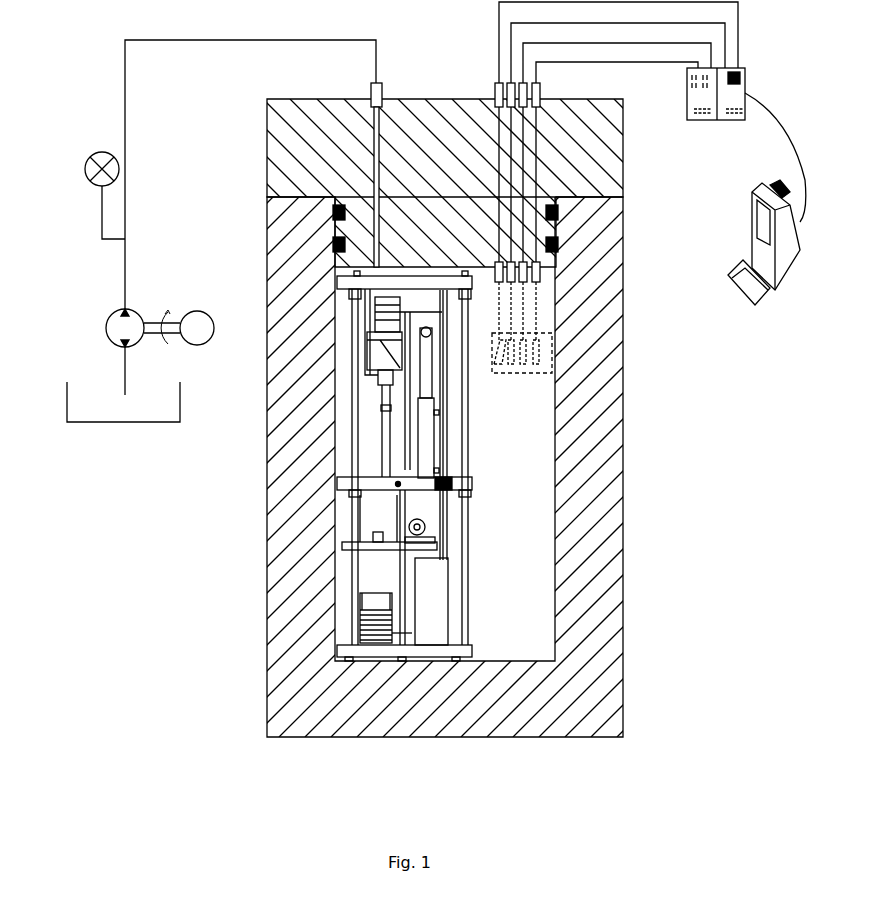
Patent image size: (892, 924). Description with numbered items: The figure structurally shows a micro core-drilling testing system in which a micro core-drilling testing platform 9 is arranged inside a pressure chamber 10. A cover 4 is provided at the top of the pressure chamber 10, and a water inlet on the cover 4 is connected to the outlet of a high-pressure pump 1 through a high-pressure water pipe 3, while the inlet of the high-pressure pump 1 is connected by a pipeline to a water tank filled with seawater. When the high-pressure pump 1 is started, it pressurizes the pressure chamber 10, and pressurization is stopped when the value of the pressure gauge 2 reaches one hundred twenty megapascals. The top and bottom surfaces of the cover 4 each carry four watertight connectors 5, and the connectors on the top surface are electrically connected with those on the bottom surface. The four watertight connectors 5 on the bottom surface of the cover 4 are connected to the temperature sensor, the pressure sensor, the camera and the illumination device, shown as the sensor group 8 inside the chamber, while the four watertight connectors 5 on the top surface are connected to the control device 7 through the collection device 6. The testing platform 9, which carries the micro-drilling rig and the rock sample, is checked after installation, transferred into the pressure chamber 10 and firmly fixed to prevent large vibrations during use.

The high-pressure pump 1 is at (140, 365).
The pressure gauge 2 is at (89, 169).
The high-pressure water pipe 3 is at (229, 39).
The cover 4 is at (264, 140).
The watertight connectors 5 is at (492, 81).
The collection device 6 is at (716, 112).
The control device 7 is at (767, 202).
The sensors 8 is at (528, 385).
The micro core-drilling testing platform 9 is at (479, 493).
The pressure chamber 10 is at (264, 700).